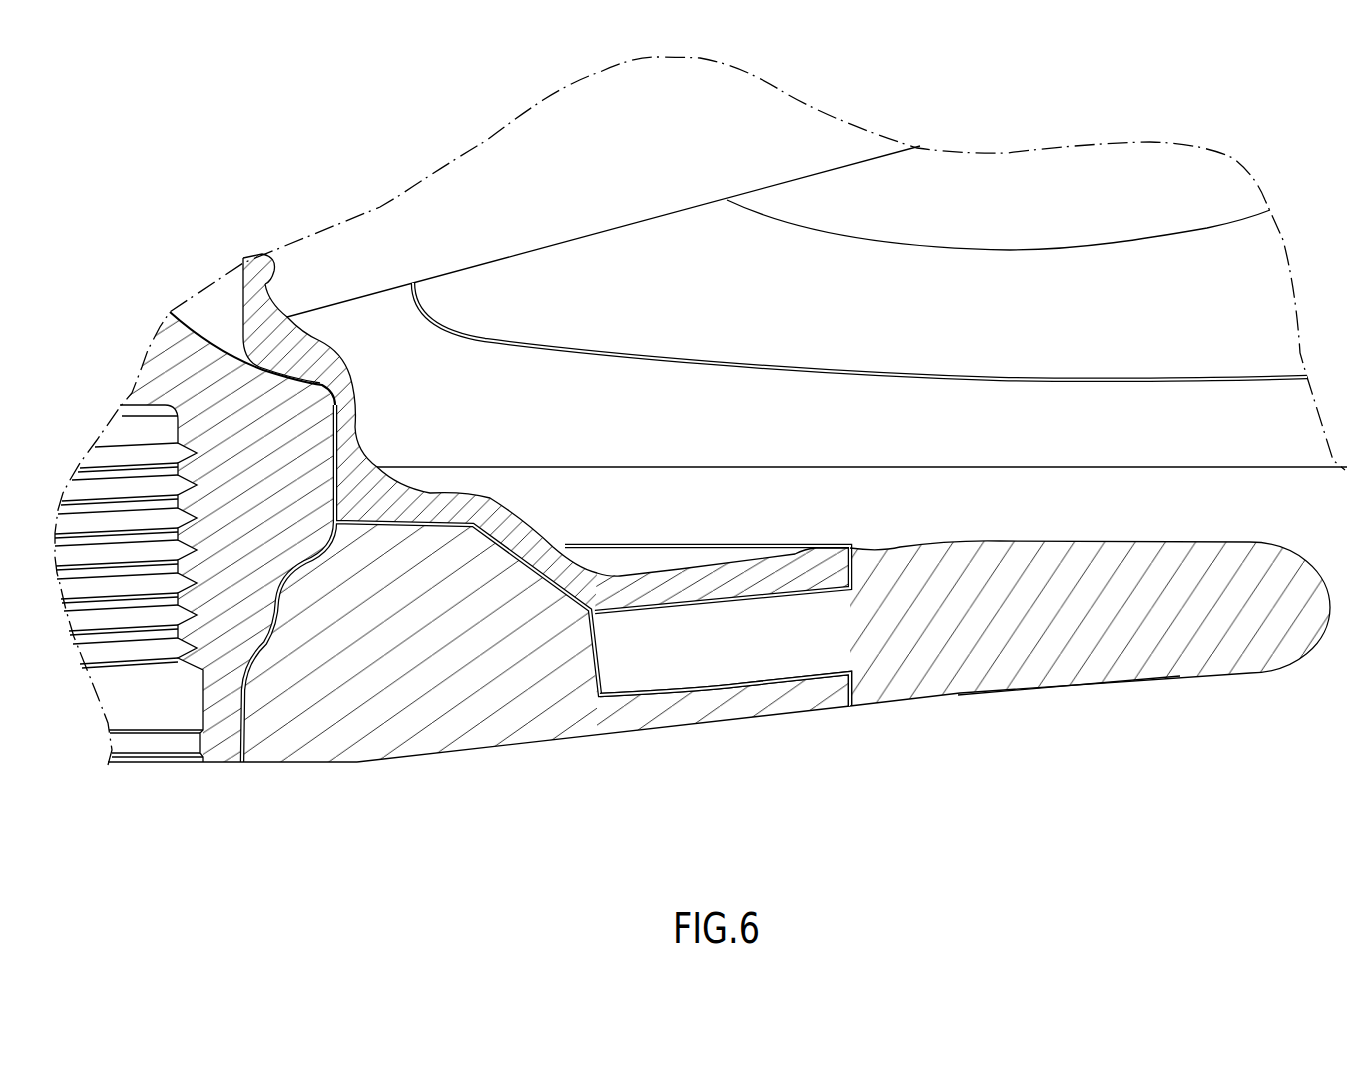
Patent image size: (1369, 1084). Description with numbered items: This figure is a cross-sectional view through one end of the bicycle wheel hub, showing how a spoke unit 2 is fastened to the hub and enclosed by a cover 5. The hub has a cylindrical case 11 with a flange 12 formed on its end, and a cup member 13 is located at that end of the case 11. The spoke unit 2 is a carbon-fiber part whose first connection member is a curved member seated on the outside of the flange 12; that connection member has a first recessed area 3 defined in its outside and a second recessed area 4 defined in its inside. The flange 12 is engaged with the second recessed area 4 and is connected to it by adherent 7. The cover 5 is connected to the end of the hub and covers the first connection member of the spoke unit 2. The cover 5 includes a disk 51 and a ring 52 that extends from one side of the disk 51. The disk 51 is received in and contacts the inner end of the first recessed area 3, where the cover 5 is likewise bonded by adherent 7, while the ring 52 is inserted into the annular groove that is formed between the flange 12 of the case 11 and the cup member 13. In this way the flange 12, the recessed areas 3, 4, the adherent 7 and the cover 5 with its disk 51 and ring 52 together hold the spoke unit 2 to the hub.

The spoke unit 2 is at (965, 710).
The first recessed area 3 is at (773, 679).
The second recessed area 4 is at (787, 593).
The cover 5 is at (468, 764).
The adherent 7 is at (848, 706).
The cylindrical case 11 is at (265, 280).
The flange 12 is at (733, 573).
The cup member 13 is at (223, 740).
The disk 51 is at (653, 731).
The ring 52 is at (350, 613).